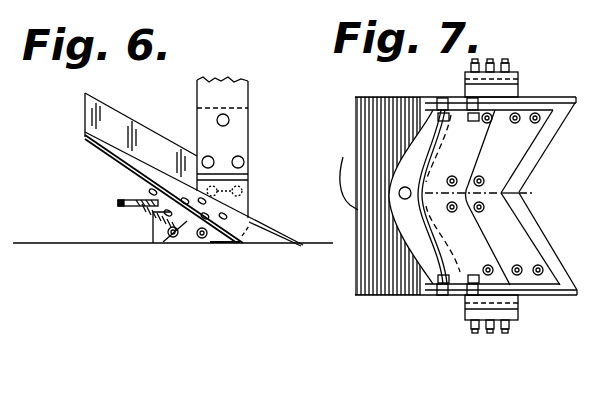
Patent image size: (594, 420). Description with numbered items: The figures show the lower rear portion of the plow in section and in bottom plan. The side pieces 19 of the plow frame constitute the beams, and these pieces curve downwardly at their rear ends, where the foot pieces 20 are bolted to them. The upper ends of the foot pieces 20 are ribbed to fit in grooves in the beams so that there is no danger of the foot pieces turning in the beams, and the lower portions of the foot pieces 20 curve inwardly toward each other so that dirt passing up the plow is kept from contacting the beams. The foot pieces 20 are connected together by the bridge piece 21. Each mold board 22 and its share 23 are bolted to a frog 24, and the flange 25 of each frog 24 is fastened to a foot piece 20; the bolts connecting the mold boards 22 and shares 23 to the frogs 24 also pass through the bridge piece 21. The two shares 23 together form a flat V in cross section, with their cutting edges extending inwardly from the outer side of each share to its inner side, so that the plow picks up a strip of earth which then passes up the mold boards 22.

In FIG. 6, the side piece 19 is at (260, 63).
In FIG. 6, the foot piece 20 is at (249, 190).
In FIG. 7, the foot piece 20 is at (508, 82).
In FIG. 6, the bridge piece 21 is at (115, 248).
In FIG. 7, the bridge piece 21 is at (424, 247).
In FIG. 6, the mold board 22 is at (125, 155).
In FIG. 7, the mold board 22 is at (370, 145).
In FIG. 6, the share 23 is at (272, 232).
In FIG. 7, the share 23 is at (522, 185).
In FIG. 6, the frog 24 is at (212, 233).
In FIG. 7, the frog 24 is at (513, 242).
In FIG. 6, the flange 25 is at (187, 236).
In FIG. 7, the flange 25 is at (518, 140).